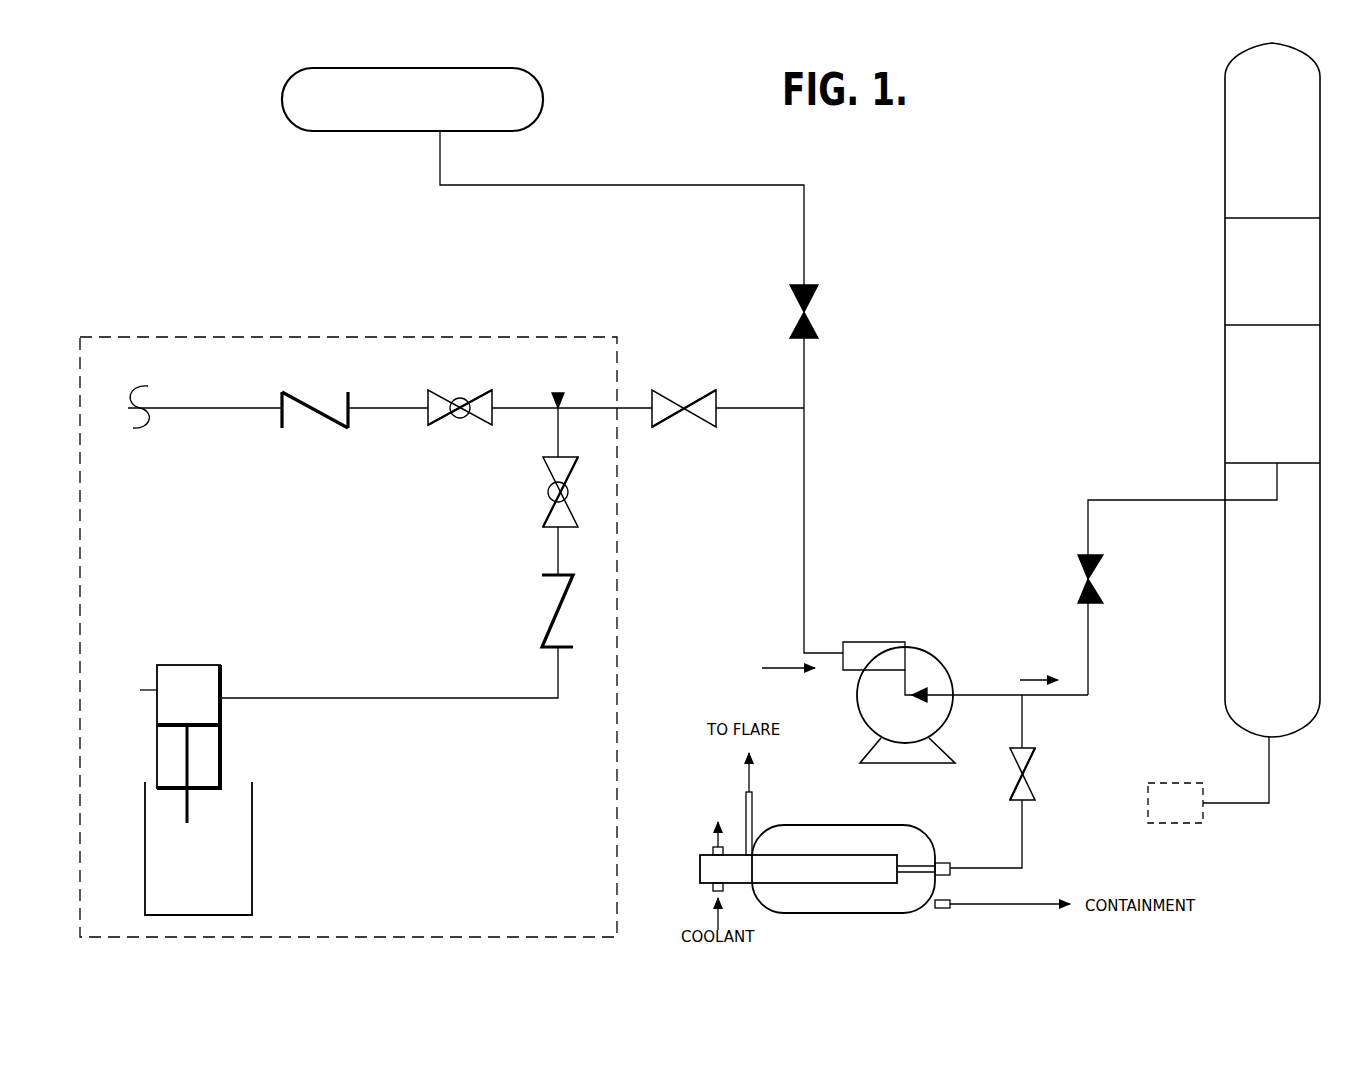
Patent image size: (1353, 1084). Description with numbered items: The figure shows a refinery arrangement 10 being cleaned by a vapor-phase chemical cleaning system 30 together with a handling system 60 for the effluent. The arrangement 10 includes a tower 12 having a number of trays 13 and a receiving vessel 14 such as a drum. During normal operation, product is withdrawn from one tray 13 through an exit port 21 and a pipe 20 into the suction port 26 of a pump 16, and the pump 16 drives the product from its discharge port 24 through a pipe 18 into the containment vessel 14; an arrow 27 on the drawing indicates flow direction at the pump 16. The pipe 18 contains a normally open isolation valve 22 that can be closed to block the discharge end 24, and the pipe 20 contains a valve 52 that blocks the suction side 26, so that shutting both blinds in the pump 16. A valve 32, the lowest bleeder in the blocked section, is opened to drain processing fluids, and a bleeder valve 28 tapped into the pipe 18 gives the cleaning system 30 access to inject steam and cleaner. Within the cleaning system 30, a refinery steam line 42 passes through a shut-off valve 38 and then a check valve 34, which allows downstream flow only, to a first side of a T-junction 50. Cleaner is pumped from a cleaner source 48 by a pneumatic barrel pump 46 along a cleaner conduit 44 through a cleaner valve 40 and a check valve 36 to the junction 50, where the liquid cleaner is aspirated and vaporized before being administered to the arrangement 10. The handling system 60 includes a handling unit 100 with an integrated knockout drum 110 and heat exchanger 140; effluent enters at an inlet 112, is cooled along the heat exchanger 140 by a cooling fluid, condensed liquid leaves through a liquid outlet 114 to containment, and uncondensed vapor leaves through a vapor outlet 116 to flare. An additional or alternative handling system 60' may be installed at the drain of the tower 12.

The arrangement 10 is at (235, 130).
The tower 12 is at (1225, 141).
The trays 13 is at (1272, 325).
The receiving vessel 14 is at (360, 133).
The pump 16 is at (928, 655).
The pipe 18 is at (440, 165).
The pipe 20 is at (1088, 528).
The exit port 21 is at (1277, 463).
The isolation valve 22 is at (815, 318).
The discharge port 24 is at (878, 642).
The suction port 26 is at (954, 700).
The flow direction indicator 27 is at (933, 692).
The bleeder valve 28 is at (683, 405).
The vapor-phase chemical cleaning system 30 is at (617, 848).
The valve 32 is at (1035, 765).
The check valve 34 is at (433, 425).
The check valve 36 is at (574, 516).
The valve 38 is at (312, 395).
The cleaner valve 40 is at (566, 607).
The steam line 42 is at (230, 408).
The cleaner conduit 44 is at (385, 698).
The pneumatic barrel pump 46 is at (157, 665).
The cleaner source 48 is at (220, 885).
The T-junction 50 is at (558, 393).
The valve 52 is at (1103, 575).
The handling system 60 is at (1065, 843).
The handling system 60' is at (1169, 783).
The handling unit 100 is at (810, 820).
The knockout drum 110 is at (881, 913).
The inlet 112 is at (942, 863).
The liquid outlet 114 is at (942, 908).
The vapor outlet 116 is at (746, 805).
The heat exchanger 140 is at (810, 883).